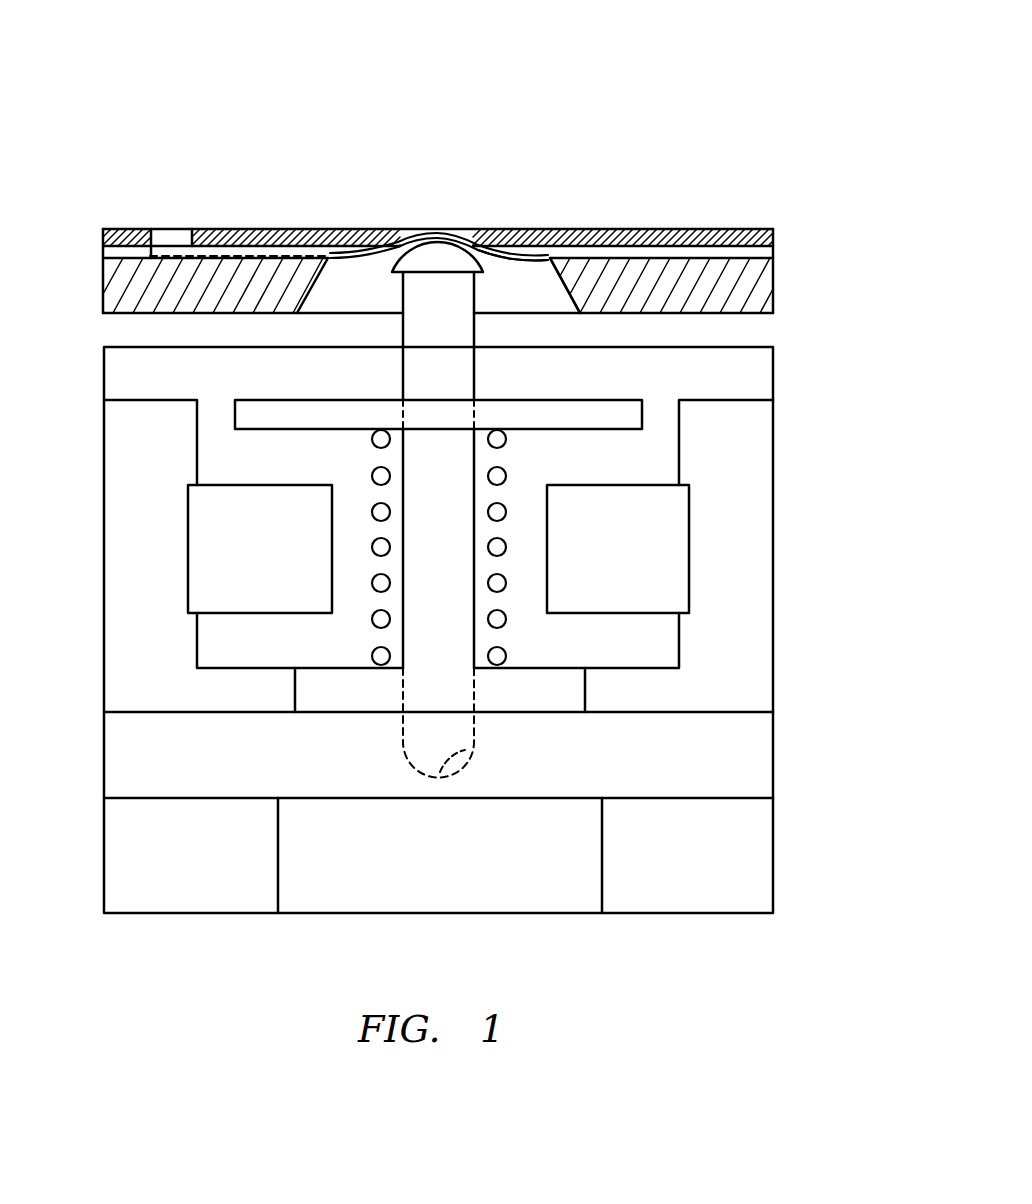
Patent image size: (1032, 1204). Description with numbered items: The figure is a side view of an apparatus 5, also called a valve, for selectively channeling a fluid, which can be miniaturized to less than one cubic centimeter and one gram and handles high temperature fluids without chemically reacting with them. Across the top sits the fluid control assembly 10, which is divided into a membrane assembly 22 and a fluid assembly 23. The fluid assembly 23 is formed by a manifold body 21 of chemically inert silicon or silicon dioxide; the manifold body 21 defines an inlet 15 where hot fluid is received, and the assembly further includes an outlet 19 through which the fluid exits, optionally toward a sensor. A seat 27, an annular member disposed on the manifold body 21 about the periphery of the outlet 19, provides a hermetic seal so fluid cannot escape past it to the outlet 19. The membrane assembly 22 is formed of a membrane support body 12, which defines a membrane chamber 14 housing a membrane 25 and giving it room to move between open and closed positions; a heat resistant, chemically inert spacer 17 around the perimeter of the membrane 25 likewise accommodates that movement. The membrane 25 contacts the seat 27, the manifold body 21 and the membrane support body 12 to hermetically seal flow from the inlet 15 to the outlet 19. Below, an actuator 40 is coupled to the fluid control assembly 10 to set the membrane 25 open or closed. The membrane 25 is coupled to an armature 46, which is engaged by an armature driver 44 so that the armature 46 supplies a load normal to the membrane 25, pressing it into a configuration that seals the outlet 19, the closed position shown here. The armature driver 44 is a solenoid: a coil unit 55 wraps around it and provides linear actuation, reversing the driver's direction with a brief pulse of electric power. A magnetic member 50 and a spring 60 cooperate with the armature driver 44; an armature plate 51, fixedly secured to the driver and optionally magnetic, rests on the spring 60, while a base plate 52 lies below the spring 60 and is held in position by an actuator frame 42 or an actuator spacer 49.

The apparatus 5 is at (748, 65).
The fluid control assembly 10 is at (838, 225).
The membrane support body 12 is at (755, 300).
The membrane chamber 14 is at (553, 303).
The inlet 15 is at (235, 250).
The spacer 17 is at (103, 256).
The outlet 19 is at (467, 236).
The manifold body 21 is at (250, 232).
The membrane assembly 22 is at (780, 288).
The fluid assembly 23 is at (722, 225).
The membrane 25 is at (356, 234).
The seat 27 is at (497, 262).
The actuator 40 is at (780, 465).
The actuator frame 42 is at (742, 611).
The armature driver 44 is at (424, 533).
The armature 46 is at (430, 250).
The actuator spacer 49 is at (742, 766).
The magnetic member 50 is at (424, 866).
The armature plate 51 is at (517, 410).
The base plate 52 is at (540, 700).
The coil unit 55 is at (241, 561).
The spring 60 is at (506, 547).